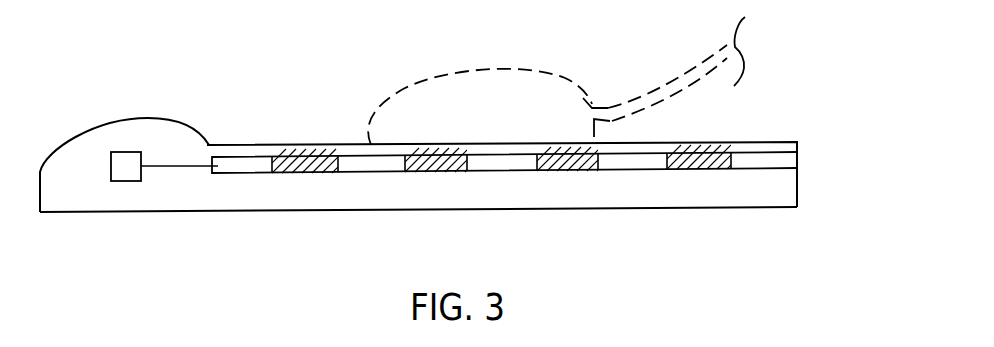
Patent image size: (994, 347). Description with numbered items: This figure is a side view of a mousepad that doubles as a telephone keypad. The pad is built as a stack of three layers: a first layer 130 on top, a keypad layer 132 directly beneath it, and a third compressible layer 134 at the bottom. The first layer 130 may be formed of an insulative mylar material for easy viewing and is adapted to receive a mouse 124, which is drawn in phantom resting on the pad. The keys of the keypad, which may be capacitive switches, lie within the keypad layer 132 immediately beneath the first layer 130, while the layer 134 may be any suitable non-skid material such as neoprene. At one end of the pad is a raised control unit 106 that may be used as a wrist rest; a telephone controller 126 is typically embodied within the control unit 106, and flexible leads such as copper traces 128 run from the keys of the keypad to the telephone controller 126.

The control unit 106 is at (139, 112).
The mouse 124 is at (515, 65).
The telephone controller 126 is at (123, 181).
The copper traces 128 is at (180, 167).
The first layer 130 is at (803, 141).
The keypad layer 132 is at (797, 155).
The third compressible layer 134 is at (797, 188).